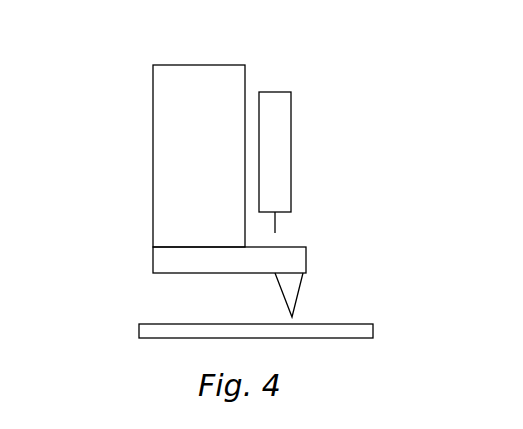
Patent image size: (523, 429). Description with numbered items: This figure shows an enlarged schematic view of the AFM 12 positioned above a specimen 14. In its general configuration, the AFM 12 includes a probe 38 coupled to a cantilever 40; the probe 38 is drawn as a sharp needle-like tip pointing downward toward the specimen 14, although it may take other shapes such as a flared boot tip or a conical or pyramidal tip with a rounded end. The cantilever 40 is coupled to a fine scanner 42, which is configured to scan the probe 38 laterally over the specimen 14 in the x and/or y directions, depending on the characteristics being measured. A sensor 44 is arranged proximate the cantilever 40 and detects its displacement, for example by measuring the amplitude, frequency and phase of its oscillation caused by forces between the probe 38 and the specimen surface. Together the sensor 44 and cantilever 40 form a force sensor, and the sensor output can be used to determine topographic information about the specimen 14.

The AFM 12 is at (98, 174).
The specimen 14 is at (352, 324).
The probe 38 is at (298, 292).
The cantilever 40 is at (306, 247).
The fine scanner 42 is at (212, 165).
The sensor 44 is at (291, 138).